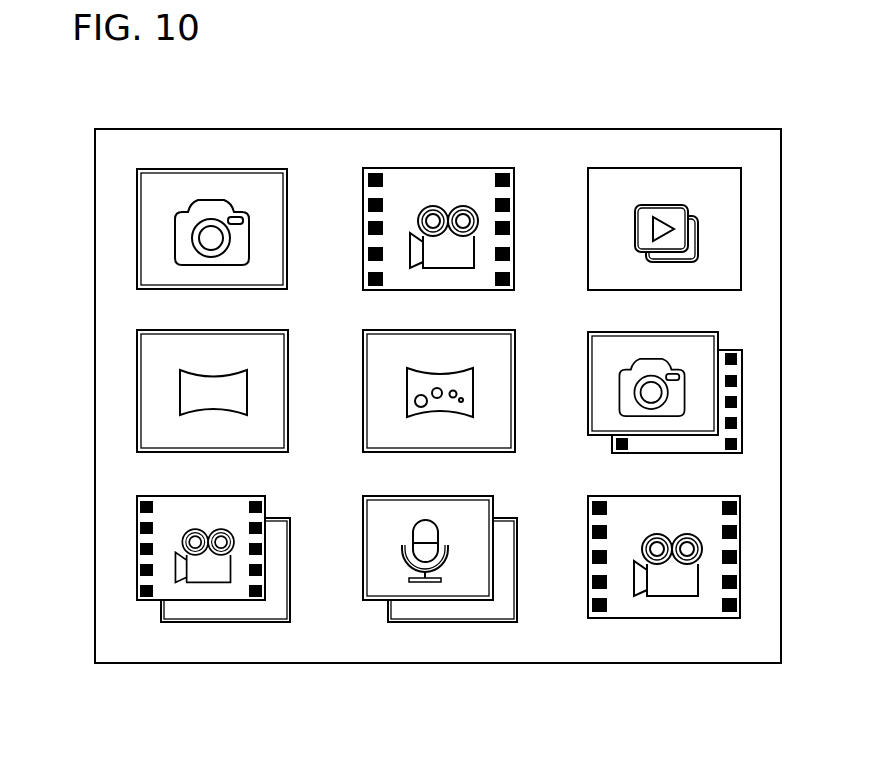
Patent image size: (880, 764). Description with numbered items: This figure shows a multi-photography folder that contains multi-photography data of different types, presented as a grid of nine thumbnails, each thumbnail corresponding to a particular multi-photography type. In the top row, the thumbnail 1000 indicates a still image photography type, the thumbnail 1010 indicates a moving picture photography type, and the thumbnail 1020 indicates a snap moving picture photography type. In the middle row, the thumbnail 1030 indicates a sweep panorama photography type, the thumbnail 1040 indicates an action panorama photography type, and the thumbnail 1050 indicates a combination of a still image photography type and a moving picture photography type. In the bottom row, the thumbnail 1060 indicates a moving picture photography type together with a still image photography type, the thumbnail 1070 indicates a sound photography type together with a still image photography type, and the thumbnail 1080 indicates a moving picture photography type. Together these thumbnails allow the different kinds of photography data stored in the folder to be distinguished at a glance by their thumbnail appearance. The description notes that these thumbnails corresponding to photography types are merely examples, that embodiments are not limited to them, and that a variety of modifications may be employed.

The thumbnail 1000 is at (257, 182).
The thumbnail 1010 is at (443, 178).
The thumbnail 1020 is at (685, 178).
The thumbnail 1030 is at (150, 371).
The thumbnail 1040 is at (502, 437).
The thumbnail 1050 is at (728, 392).
The thumbnail 1060 is at (178, 608).
The thumbnail 1070 is at (372, 600).
The thumbnail 1080 is at (702, 612).